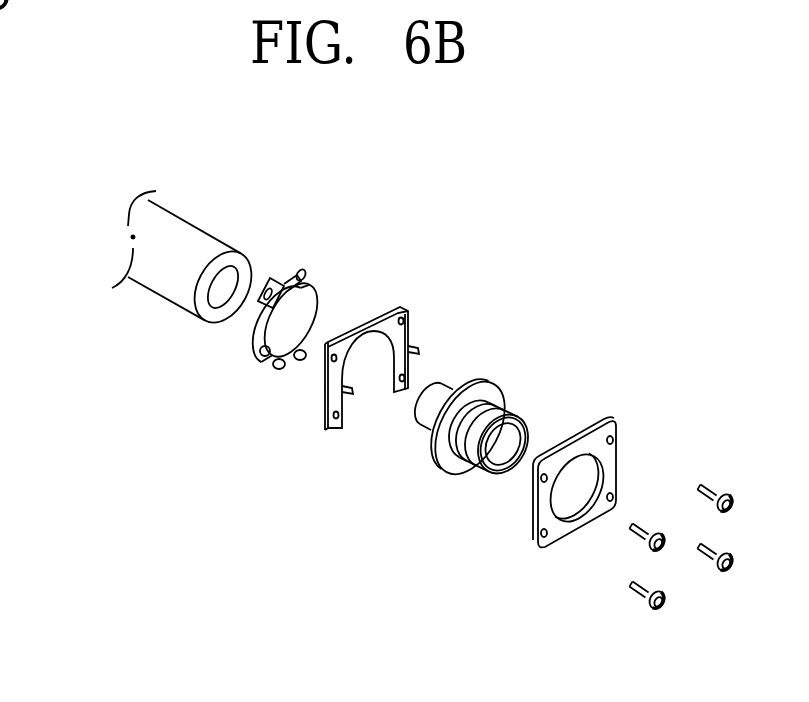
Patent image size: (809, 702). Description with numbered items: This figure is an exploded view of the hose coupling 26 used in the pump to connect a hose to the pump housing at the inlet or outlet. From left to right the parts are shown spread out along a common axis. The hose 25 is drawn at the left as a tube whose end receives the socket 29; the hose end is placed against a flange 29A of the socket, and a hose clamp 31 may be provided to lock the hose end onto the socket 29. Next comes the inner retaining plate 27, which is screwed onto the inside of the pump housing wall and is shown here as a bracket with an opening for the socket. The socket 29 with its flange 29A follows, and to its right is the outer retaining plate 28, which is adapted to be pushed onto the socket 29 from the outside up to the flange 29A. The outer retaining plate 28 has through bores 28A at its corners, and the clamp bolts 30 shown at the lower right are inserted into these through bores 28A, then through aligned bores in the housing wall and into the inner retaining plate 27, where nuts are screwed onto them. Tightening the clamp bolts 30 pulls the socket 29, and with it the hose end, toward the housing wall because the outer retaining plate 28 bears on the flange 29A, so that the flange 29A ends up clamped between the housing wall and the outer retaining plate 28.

The hose 25 is at (172, 263).
The hose coupling 26 is at (379, 477).
The inner retaining plate 27 is at (388, 327).
The outer retaining plate 28 is at (666, 457).
The through bores 28A is at (618, 437).
The socket 29 is at (523, 420).
The flange 29A is at (492, 385).
The clamp bolts 30 is at (632, 590).
The hose clamp 31 is at (312, 288).